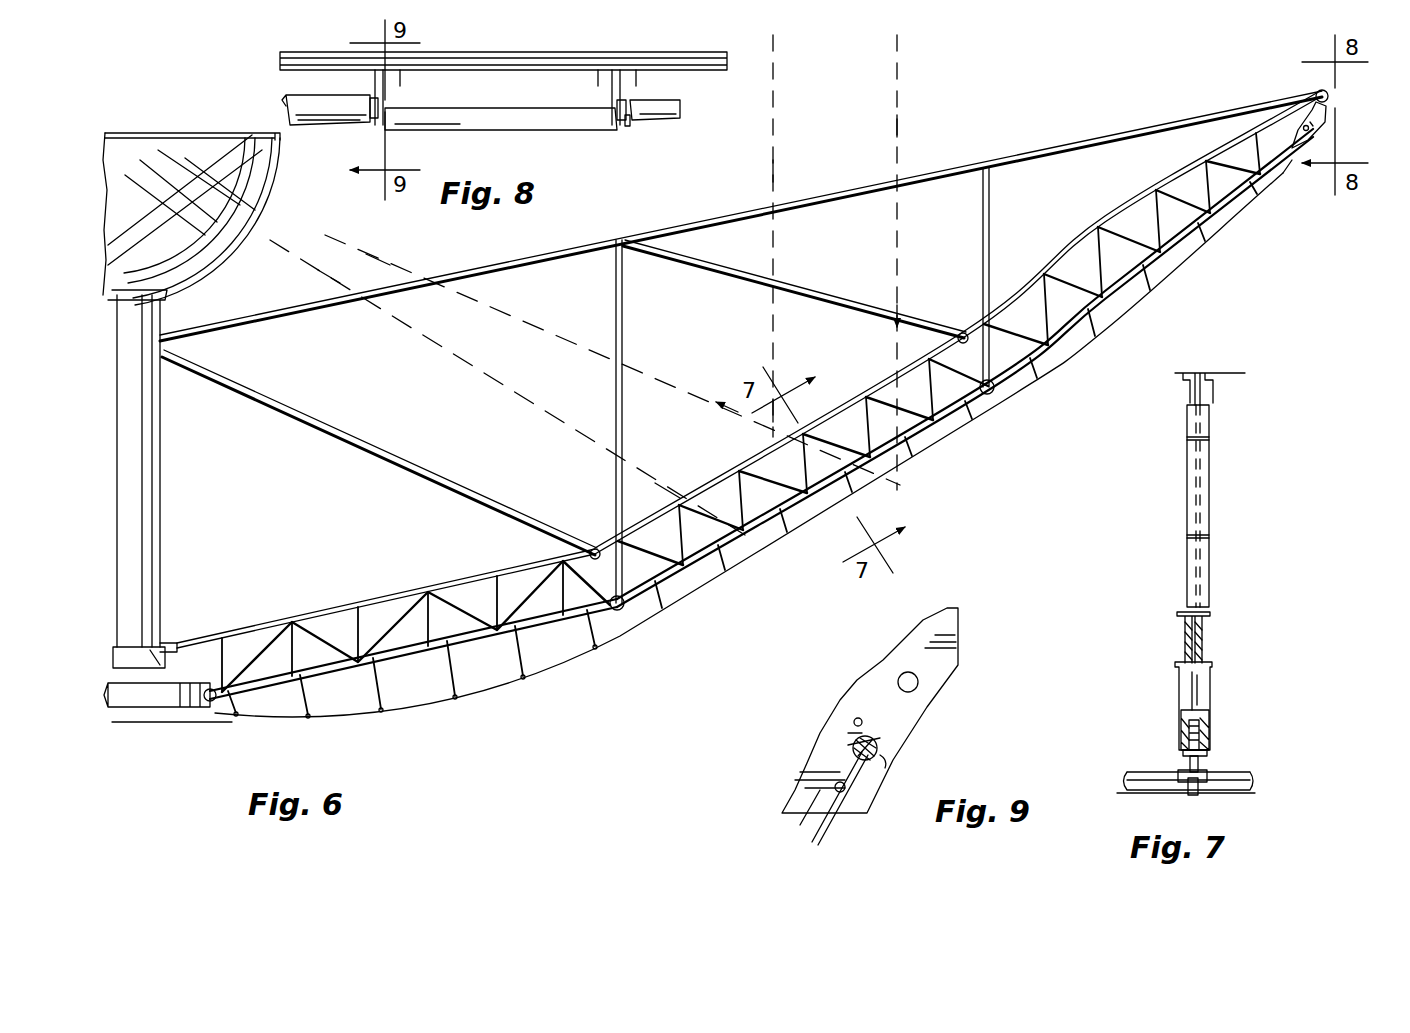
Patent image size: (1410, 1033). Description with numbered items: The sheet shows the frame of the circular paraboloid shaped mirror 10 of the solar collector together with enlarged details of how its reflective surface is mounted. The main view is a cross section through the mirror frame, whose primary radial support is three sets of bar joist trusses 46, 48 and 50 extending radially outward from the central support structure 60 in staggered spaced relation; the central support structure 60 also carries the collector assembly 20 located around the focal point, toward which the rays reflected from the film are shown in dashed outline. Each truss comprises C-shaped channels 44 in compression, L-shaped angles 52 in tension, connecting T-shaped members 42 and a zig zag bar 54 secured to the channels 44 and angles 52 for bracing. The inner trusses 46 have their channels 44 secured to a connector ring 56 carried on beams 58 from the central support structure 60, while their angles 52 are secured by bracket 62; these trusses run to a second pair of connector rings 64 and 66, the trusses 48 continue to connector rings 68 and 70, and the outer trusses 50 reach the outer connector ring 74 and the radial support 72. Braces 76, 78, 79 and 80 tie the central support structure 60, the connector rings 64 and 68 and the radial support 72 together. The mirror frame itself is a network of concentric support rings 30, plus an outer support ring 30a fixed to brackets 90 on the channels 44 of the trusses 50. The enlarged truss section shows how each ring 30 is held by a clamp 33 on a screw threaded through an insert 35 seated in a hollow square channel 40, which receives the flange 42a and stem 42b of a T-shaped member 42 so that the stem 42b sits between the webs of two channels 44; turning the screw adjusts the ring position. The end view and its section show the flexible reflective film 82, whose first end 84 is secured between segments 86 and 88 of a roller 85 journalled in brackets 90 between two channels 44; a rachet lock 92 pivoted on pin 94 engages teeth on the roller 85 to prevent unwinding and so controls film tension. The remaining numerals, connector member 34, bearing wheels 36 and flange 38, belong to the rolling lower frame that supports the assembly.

In FIG. 6, the circular paraboloid shaped mirror 10 is at (995, 420).
In FIG. 6, the collector assembly 20 is at (268, 220).
In FIG. 6, the support rings 30 is at (230, 714).
In FIG. 7, the support rings 30 is at (1248, 778).
In FIG. 6, the outer support ring 30a is at (1292, 162).
In FIG. 9, the outer support ring 30a is at (818, 800).
In FIG. 7, the clamps 33 is at (1196, 795).
In FIG. 7, the connector member 34 is at (1200, 763).
In FIG. 7, the insert 35 is at (1182, 735).
In FIG. 7, the bearing wheels 36 is at (1183, 753).
In FIG. 7, the flange 38 is at (1202, 758).
In FIG. 7, the hollow square channels 40 is at (1210, 686).
In FIG. 6, the T-shaped members 42 is at (223, 642).
In FIG. 7, the T-shaped members 42 is at (1210, 525).
In FIG. 7, the flange 42a is at (1210, 580).
In FIG. 7, the stem 42b is at (1207, 633).
In FIG. 6, the C-shaped channels 44 is at (402, 612).
In FIG. 7, the C-shaped channels 44 is at (1188, 636).
In FIG. 6, the bar joist trusses 46 is at (345, 690).
In FIG. 6, the bar joist trusses 48 is at (760, 548).
In FIG. 6, the bar joist trusses 50 is at (1170, 248).
In FIG. 6, the L-shaped angles 52 is at (310, 612).
In FIG. 7, the L-shaped angles 52 is at (1178, 370).
In FIG. 6, the zig zag bar 54 is at (254, 636).
In FIG. 6, the connector ring 56 is at (210, 705).
In FIG. 6, the beams 58 is at (138, 705).
In FIG. 6, the central support structure 60 is at (152, 486).
In FIG. 6, the bracket 62 is at (172, 640).
In FIG. 6, the connector ring 64 is at (626, 612).
In FIG. 6, the connector ring 66 is at (592, 548).
In FIG. 6, the connector ring 68 is at (996, 389).
In FIG. 6, the connector ring 70 is at (960, 332).
In FIG. 6, the radial support 72 is at (875, 185).
In FIG. 6, the outer connector ring 74 is at (1330, 98).
In FIG. 8, the outer connector ring 74 is at (492, 55).
In FIG. 6, the brace 76 is at (450, 498).
In FIG. 6, the brace 78 is at (612, 420).
In FIG. 6, the brace 79 is at (826, 316).
In FIG. 6, the brace 80 is at (983, 228).
In FIG. 6, the flexible reflective film 82 is at (897, 482).
In FIG. 8, the flexible reflective film 82 is at (525, 124).
In FIG. 9, the flexible reflective film 82 is at (828, 822).
In FIG. 9, the first end 84 is at (848, 735).
In FIG. 8, the roller 85 is at (620, 128).
In FIG. 9, the roller 85 is at (920, 683).
In FIG. 9, the segment 86 is at (890, 758).
In FIG. 9, the segment 88 is at (853, 748).
In FIG. 6, the brackets 90 is at (1320, 124).
In FIG. 8, the brackets 90 is at (636, 80).
In FIG. 9, the brackets 90 is at (908, 732).
In FIG. 8, the rachet lock 92 is at (386, 108).
In FIG. 9, the rachet lock 92 is at (856, 738).
In FIG. 9, the pin 94 is at (860, 718).